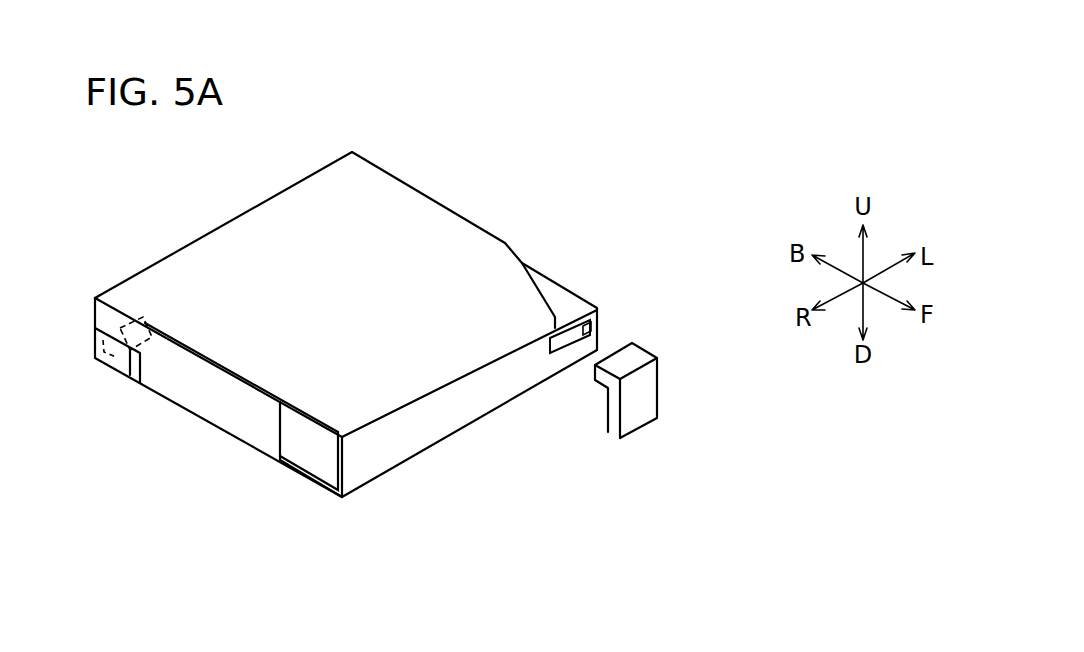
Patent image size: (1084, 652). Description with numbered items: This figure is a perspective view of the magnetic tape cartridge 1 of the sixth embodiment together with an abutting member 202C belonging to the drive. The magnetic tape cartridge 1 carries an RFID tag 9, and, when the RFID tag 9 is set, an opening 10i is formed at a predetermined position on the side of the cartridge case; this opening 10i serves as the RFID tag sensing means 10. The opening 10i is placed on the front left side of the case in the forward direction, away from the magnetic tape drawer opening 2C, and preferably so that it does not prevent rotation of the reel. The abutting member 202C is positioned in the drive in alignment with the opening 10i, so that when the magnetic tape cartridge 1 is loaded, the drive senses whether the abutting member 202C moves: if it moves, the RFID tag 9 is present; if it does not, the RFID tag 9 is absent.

The magnetic tape cartridge 1 is at (452, 183).
The RFID tag 9 is at (122, 330).
The magnetic tape drawer opening 2C is at (305, 447).
The opening 10i is at (590, 320).
The RFID tag sensing means 10 is at (686, 296).
The abutting member 202C is at (642, 397).